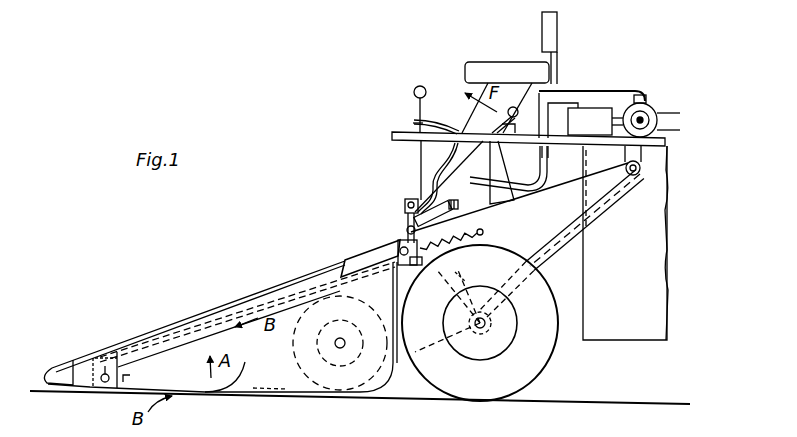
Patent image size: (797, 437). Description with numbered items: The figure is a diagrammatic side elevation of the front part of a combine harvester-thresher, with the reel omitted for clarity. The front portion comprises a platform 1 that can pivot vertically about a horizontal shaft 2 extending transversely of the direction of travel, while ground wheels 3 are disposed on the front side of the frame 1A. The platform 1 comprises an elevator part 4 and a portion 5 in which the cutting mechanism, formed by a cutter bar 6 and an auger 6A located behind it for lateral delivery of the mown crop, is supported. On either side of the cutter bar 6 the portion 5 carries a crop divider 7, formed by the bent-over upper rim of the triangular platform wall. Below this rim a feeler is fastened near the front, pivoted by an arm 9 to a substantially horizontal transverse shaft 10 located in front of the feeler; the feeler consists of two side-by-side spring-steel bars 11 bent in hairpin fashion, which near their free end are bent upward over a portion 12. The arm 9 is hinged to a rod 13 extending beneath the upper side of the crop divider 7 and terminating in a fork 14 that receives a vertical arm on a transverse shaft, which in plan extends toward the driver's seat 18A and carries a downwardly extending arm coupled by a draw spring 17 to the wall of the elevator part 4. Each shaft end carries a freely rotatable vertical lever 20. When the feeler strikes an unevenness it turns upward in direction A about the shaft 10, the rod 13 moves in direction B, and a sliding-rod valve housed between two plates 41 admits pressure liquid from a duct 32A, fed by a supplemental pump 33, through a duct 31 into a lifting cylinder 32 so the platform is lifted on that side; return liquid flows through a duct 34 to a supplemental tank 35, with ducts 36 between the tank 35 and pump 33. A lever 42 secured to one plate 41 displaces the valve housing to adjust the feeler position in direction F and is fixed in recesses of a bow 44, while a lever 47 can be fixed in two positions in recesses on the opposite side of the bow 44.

The platform 1 is at (290, 394).
The frame 1A is at (652, 232).
The horizontal shaft 2 is at (641, 176).
The ground wheels 3 is at (534, 362).
The elevator part 4 is at (573, 185).
The portion of the platform 5 is at (360, 263).
The cutter bar 6 is at (296, 389).
The auger 6A is at (337, 393).
The crop divider 7 is at (196, 318).
The arm 9 is at (132, 370).
The horizontal shaft 10 is at (100, 386).
The bars 11 is at (181, 389).
The portion 12 is at (246, 366).
The rod 13 is at (156, 334).
The fork 14 is at (397, 278).
The draw spring 17 is at (480, 230).
The driver's seat 18A is at (508, 62).
The vertical lever 20 is at (405, 215).
The duct 31 is at (471, 287).
The lifting cylinder 32 is at (443, 306).
The duct 32A is at (529, 260).
The supplemental pump 33 is at (650, 106).
The duct 34 is at (453, 152).
The supplemental tank 35 is at (594, 112).
The ducts 36 is at (615, 98).
The plates 41 is at (456, 208).
The lever 42 is at (512, 141).
The bow 44 is at (455, 130).
The lever 47 is at (414, 100).